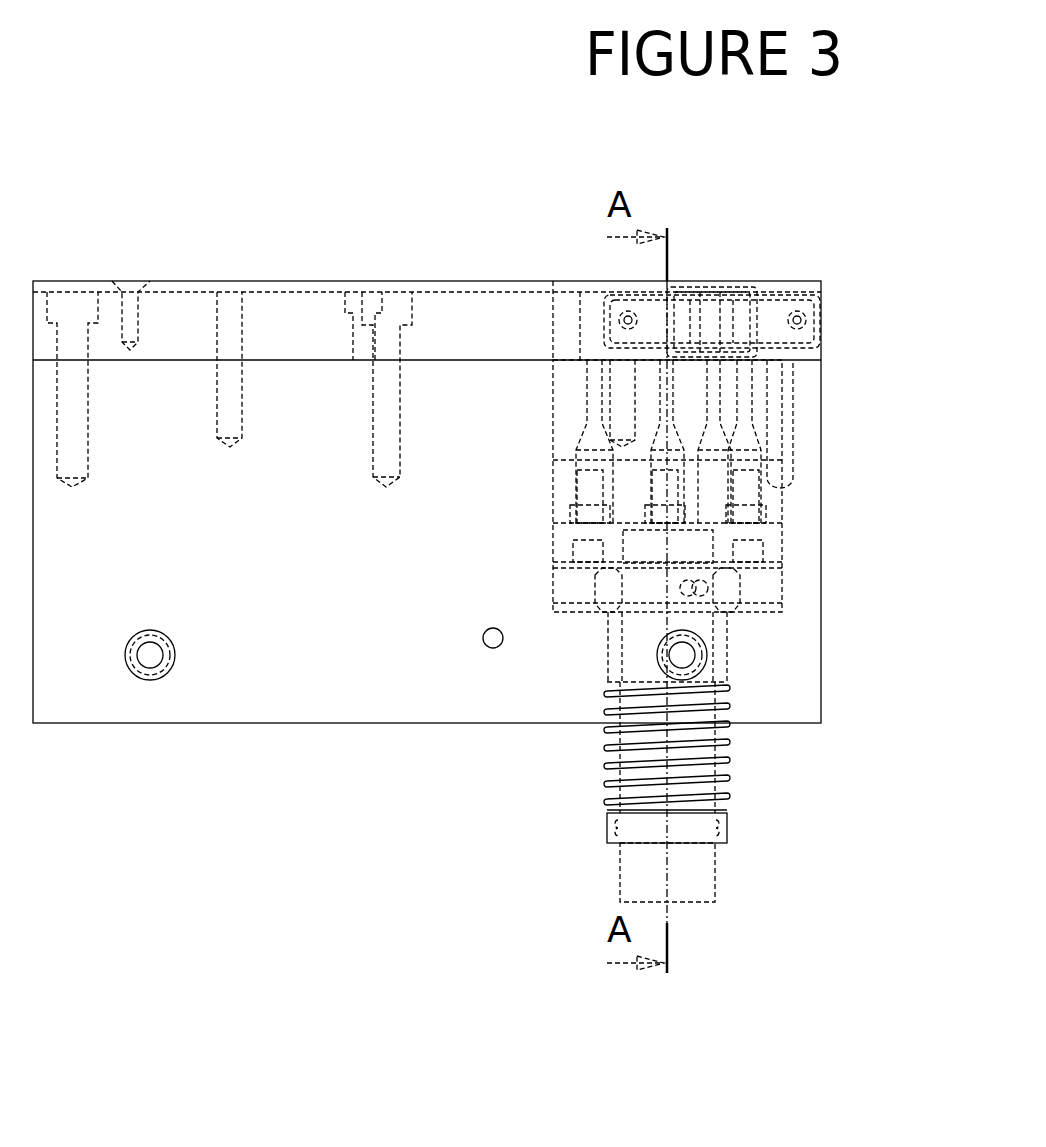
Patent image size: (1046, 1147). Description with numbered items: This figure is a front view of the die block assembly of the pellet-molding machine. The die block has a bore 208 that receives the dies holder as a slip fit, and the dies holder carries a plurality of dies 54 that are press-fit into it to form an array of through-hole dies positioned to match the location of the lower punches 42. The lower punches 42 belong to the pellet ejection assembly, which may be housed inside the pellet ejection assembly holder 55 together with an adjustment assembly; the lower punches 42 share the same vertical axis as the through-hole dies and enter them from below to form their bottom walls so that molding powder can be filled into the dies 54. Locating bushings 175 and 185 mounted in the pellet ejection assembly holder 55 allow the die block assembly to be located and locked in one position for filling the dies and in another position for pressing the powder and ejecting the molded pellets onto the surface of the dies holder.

The lower punches 42 is at (742, 397).
The dies 54 is at (582, 310).
The pellet ejection assembly holder 55 is at (795, 523).
The locating bushing 175 is at (168, 662).
The locating bushing 185 is at (697, 652).
The bore 208 is at (565, 402).